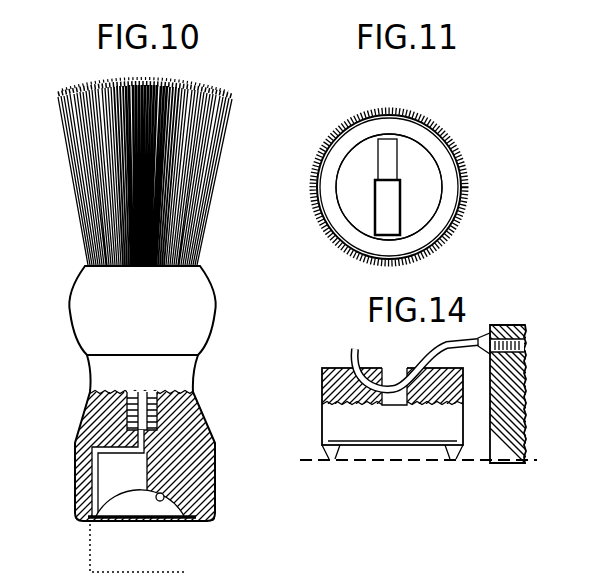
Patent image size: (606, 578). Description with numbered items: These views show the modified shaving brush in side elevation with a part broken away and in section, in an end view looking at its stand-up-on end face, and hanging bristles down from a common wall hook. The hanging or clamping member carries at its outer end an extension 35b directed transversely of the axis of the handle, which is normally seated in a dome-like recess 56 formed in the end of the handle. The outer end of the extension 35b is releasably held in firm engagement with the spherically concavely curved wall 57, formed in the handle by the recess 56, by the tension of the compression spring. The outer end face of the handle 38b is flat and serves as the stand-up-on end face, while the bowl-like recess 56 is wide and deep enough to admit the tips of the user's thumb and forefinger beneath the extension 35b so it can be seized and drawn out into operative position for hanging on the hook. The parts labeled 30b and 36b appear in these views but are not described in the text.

In FIG. 11, the brush head 30b is at (365, 112).
In FIG. 10, the extension 35b is at (170, 522).
In FIG. 11, the extension 35b is at (397, 153).
In FIG. 14, the extension 35b is at (397, 372).
In FIG. 10, the retaining clip member 36b is at (98, 472).
In FIG. 10, the outer end face of the handle 38b is at (218, 524).
In FIG. 11, the outer end face of the handle 38b is at (442, 212).
In FIG. 10, the dome-like recess 56 is at (148, 507).
In FIG. 11, the dome-like recess 56 is at (355, 202).
In FIG. 14, the dome-like recess 56 is at (357, 378).
In FIG. 10, the spherically concavely curved wall 57 is at (176, 491).